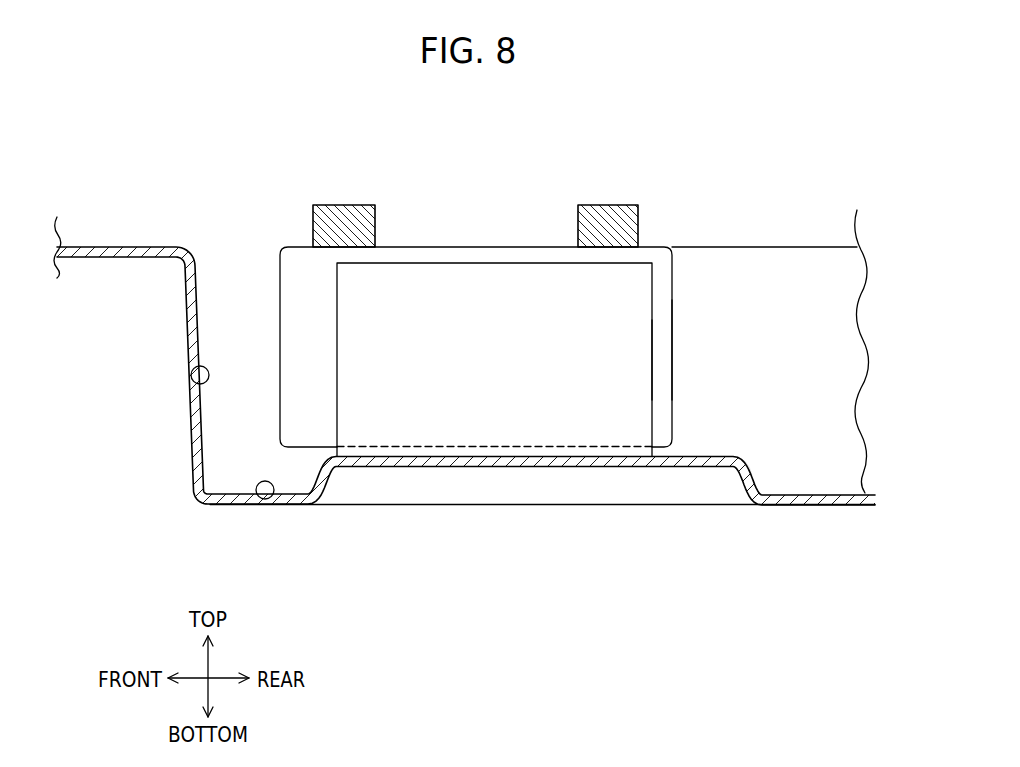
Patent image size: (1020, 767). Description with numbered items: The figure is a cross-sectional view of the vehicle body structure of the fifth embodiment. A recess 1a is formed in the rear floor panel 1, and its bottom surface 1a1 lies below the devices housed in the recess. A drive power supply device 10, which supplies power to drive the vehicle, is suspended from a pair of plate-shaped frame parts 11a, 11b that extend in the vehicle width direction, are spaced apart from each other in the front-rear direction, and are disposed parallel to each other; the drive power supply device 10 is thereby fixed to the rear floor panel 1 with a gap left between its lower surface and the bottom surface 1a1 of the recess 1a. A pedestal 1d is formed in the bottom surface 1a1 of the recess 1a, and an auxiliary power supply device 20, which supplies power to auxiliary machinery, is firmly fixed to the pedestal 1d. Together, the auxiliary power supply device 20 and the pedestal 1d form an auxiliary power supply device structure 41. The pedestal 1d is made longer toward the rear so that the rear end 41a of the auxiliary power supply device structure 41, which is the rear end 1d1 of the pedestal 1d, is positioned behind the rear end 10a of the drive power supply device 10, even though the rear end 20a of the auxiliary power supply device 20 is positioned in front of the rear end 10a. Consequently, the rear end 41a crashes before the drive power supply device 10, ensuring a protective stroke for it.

The rear floor panel 1 is at (127, 247).
The recess 1a is at (196, 385).
The bottom surface 1a1 is at (272, 504).
The drive power supply device 10 is at (674, 285).
The rear end 10a is at (673, 323).
The frame part 11a is at (347, 204).
The frame part 11b is at (611, 204).
The auxiliary power supply device 20 is at (654, 390).
The rear end 20a is at (653, 354).
The pedestal 1d is at (695, 456).
The auxiliary power supply device structure 41 is at (757, 375).
The rear end 41a is at (752, 473).
The rear end 1d1 is at (764, 481).